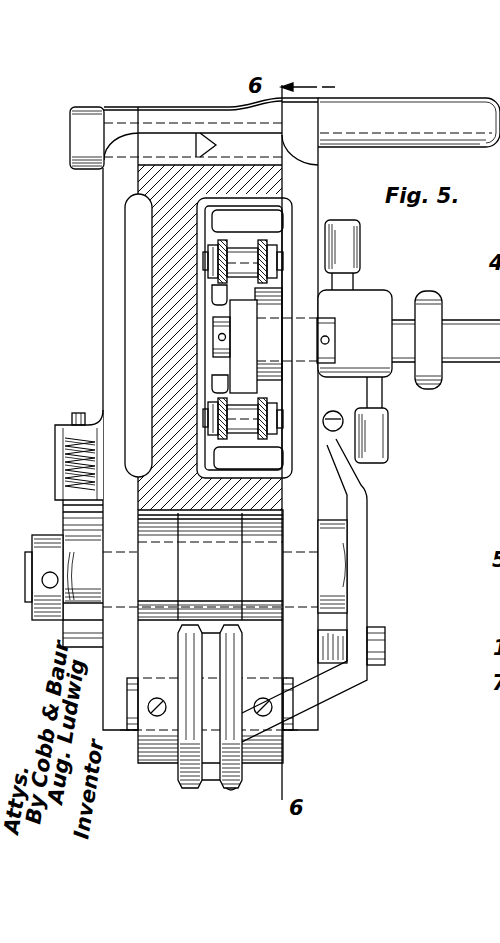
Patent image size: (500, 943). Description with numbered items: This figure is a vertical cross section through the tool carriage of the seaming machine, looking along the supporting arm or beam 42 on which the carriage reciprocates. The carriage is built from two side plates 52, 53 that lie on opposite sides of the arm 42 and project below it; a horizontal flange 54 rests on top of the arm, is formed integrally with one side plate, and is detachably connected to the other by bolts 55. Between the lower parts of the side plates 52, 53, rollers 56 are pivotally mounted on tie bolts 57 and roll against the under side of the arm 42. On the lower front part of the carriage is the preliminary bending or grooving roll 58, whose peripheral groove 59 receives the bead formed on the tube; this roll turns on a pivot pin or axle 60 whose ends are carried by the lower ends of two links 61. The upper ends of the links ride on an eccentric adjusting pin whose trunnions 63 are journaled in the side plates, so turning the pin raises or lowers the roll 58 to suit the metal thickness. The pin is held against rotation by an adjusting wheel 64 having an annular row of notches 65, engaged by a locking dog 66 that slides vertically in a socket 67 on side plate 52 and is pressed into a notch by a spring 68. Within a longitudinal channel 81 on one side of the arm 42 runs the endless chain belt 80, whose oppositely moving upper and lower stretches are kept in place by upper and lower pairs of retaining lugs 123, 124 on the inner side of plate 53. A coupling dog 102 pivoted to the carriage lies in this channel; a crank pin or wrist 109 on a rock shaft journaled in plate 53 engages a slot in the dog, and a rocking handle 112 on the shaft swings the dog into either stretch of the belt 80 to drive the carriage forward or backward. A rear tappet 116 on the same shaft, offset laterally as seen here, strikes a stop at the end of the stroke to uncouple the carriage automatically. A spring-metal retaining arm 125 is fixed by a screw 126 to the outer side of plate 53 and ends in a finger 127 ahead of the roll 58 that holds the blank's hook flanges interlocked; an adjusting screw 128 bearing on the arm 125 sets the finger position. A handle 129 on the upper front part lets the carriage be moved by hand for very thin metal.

The supporting arm or beam 42 is at (145, 183).
The side plate 52 is at (112, 341).
The side plate 53 is at (307, 192).
The horizontal flange 54 is at (233, 167).
The bolt 55 is at (80, 149).
The roller 56 is at (210, 636).
The tie bolt 57 is at (331, 572).
The preliminary bending or grooving roll 58 is at (177, 771).
The peripheral groove 59 is at (216, 785).
The pivot pin or axle 60 is at (293, 736).
The link 61 is at (164, 676).
The trunnion 63 is at (68, 478).
The locking wheel or adjusting wheel 64 is at (91, 648).
The notch or recess 65 is at (68, 626).
The locking dog or pawl 66 is at (66, 507).
The socket 67 is at (66, 456).
The spring 68 is at (86, 412).
The endless belt 80 is at (205, 263).
The longitudinal channel 81 is at (206, 233).
The coupling dog or pawl 102 is at (253, 346).
The crank pin or wrist 109 is at (231, 356).
The rocking handle 112 is at (400, 282).
The rear tappet 116 is at (352, 247).
The upper retaining lugs 123 is at (224, 296).
The lower retaining lugs 124 is at (222, 394).
The retaining arm 125 is at (386, 438).
The screw 126 is at (334, 432).
The finger 127 is at (232, 790).
The adjusting screw 128 is at (352, 652).
The handle 129 is at (440, 99).